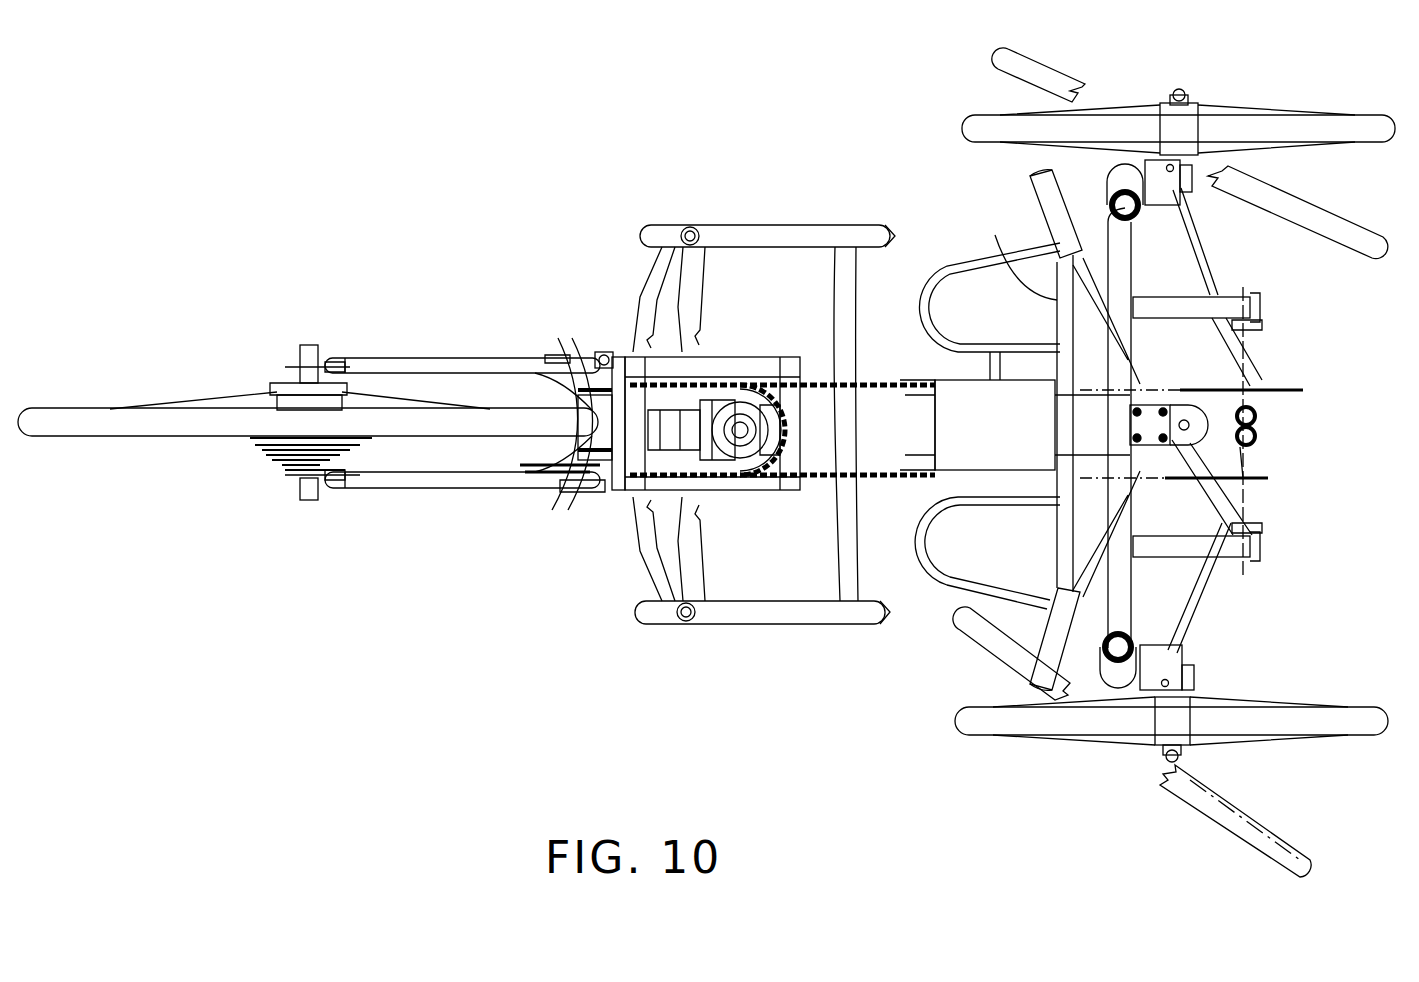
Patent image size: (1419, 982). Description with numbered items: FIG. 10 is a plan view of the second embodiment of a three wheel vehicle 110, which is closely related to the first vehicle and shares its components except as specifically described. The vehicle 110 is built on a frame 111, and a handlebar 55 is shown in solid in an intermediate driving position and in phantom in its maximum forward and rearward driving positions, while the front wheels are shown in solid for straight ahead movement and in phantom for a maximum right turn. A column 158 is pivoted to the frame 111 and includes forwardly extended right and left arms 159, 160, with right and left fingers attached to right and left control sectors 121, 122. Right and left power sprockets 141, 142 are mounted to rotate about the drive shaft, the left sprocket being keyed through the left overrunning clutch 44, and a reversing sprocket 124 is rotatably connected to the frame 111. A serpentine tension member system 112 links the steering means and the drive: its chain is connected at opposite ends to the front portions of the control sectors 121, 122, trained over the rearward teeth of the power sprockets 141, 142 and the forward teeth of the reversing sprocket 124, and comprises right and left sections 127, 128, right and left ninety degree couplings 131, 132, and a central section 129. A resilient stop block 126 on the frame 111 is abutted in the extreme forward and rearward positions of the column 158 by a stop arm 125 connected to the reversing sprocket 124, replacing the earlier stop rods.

The three wheel vehicle 110 is at (655, 160).
The frame 111 is at (478, 357).
The left power sprocket 142 is at (578, 383).
The left overrunning clutch 44 is at (604, 357).
The right power sprocket 141 is at (577, 478).
The right 90 degree coupling 131 is at (665, 480).
The left 90 degree coupling 132 is at (690, 372).
The serpentine tension member system 112 is at (770, 362).
The central section 129 is at (797, 377).
The left section 128 is at (887, 385).
The right section 127 is at (905, 478).
The resilient stop block 126 is at (745, 480).
The stop arm 125 is at (758, 485).
The reversing sprocket 124 is at (796, 480).
The handlebar 55 is at (1015, 268).
The column 158 is at (1197, 388).
The left arm 160 is at (1249, 341).
The left control sector 122 is at (1293, 390).
The right control sector 121 is at (1250, 476).
The right arm 159 is at (1247, 514).